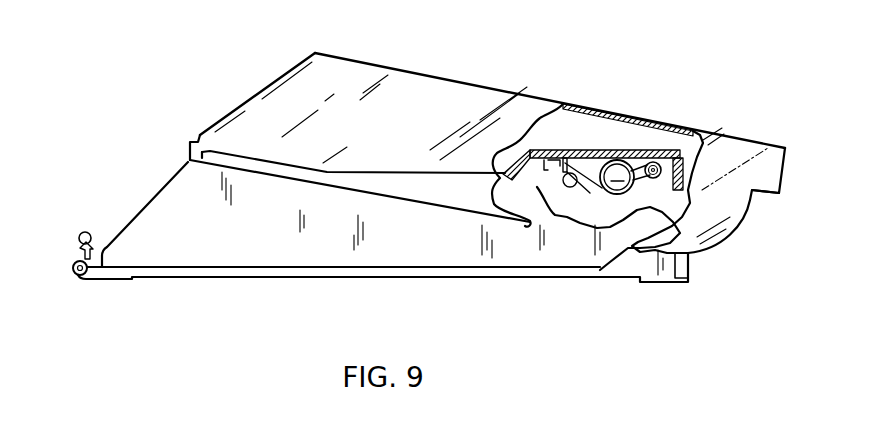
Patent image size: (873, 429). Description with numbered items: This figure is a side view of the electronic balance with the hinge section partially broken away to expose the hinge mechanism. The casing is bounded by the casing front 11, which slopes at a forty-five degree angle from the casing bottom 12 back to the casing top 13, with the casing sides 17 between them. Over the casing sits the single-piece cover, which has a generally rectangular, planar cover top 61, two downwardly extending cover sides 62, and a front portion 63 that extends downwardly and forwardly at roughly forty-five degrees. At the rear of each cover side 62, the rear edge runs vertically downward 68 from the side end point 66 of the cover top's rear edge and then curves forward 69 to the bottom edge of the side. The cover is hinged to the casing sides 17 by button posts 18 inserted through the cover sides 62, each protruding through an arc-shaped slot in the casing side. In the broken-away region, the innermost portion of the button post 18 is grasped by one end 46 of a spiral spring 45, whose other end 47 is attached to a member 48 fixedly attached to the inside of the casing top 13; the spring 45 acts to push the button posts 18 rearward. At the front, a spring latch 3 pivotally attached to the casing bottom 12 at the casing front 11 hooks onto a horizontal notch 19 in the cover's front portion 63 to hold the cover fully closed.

The spring latch 3 is at (78, 252).
The casing front 11 is at (112, 191).
The casing bottom 12 is at (118, 279).
The casing top 13 is at (608, 150).
The casing sides 17 is at (288, 240).
The button post 18 is at (658, 179).
The horizontal notch 19 is at (195, 136).
The spiral spring 45 is at (615, 192).
The one end of the spring 46 is at (648, 187).
The other end of the spring 47 is at (585, 185).
The member 48 is at (567, 163).
The cover top 61 is at (362, 62).
The cover sides 62 is at (376, 139).
The front portion of the cover 63 is at (292, 70).
The side end points of the cover top's rear edge 66 is at (785, 148).
The vertical portion of the cover's rear side edge 68 is at (783, 178).
The curved edge portion 69 is at (727, 238).